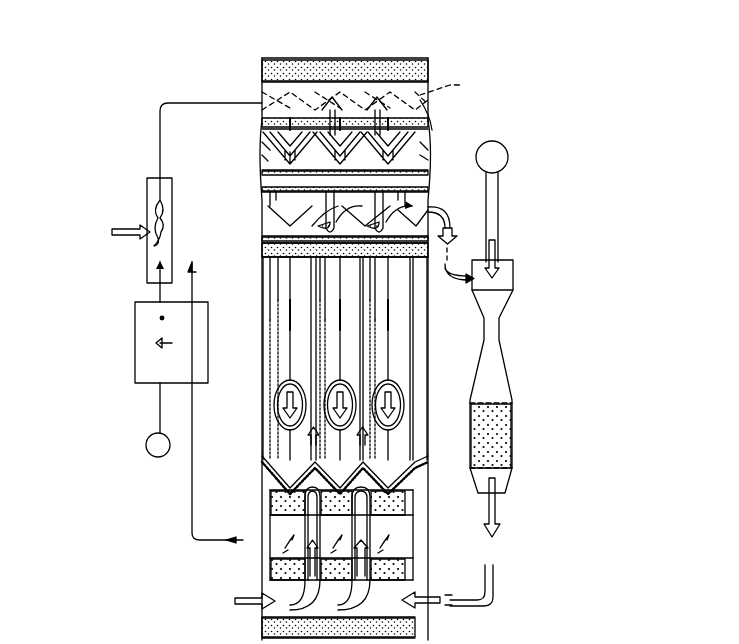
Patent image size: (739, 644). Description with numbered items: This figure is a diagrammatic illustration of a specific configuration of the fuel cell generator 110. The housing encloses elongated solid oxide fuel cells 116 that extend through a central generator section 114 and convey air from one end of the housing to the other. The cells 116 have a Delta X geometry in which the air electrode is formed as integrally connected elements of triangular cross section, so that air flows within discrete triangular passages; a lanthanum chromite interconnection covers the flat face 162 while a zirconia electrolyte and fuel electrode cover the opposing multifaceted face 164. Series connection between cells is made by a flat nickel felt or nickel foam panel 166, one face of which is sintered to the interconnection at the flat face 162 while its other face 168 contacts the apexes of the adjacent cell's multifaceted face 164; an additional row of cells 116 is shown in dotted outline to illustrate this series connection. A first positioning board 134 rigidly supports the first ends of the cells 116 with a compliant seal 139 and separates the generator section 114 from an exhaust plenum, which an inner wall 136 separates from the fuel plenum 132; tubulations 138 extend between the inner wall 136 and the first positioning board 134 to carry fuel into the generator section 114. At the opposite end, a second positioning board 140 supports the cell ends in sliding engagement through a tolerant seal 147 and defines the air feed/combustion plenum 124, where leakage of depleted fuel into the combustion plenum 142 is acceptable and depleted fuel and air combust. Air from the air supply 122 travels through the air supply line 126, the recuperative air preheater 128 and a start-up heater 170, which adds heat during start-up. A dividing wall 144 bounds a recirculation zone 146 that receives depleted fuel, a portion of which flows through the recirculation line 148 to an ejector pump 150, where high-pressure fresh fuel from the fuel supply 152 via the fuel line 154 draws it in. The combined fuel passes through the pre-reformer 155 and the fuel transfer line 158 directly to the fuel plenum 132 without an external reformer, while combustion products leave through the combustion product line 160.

The fuel cell generator 110 is at (478, 50).
The generator section 114 is at (258, 433).
The fuel cells 116 is at (255, 335).
The air supply 122 is at (147, 443).
The air feed/combustion plenum 124 is at (395, 538).
The air supply line 126 is at (174, 103).
The recuperative air preheater 128 is at (134, 322).
The fuel plenum 132 is at (418, 612).
The first positioning board 134 is at (395, 505).
The inner wall 136 is at (398, 565).
The tubulations 138 is at (360, 583).
The seal 139 is at (372, 480).
The second positioning board 140 is at (318, 190).
The combustion plenum 142 is at (258, 82).
The dividing wall 144 is at (268, 248).
The recirculation zone 146 is at (268, 222).
The tolerant seal 147 is at (432, 168).
The recirculation line 148 is at (444, 215).
The ejector pump 150 is at (505, 358).
The fuel supply 152 is at (505, 148).
The fuel line 154 is at (500, 205).
The pre-reformer 155 is at (512, 430).
The fuel transfer line 158 is at (495, 590).
The combustion product line 160 is at (192, 540).
The flat face 162 is at (340, 118).
The multifaceted face 164 is at (400, 335).
The nickel felt or nickel foam panel 166 is at (270, 125).
The face of the panel 168 is at (425, 98).
The start-up heater 170 is at (146, 192).